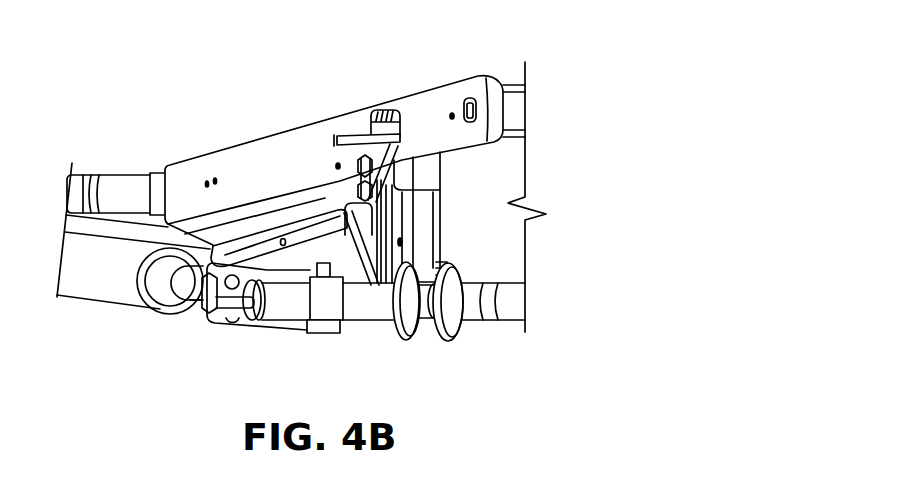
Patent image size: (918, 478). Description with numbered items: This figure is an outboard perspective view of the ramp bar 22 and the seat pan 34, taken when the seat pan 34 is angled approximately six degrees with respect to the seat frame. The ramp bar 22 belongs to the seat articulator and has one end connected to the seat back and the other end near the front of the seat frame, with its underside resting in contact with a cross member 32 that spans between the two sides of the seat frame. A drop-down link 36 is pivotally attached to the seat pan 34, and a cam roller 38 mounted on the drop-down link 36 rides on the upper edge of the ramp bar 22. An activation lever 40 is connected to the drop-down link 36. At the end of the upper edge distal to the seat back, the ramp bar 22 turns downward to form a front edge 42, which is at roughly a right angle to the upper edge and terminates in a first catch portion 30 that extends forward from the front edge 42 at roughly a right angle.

The ramp bar 22 is at (352, 308).
The first catch portion 30 is at (430, 252).
The cross member 32 is at (516, 307).
The seat pan 34 is at (275, 188).
The drop-down link 36 is at (382, 113).
The cam roller 38 is at (428, 170).
The activation lever 40 is at (340, 137).
The front edge 42 is at (428, 218).